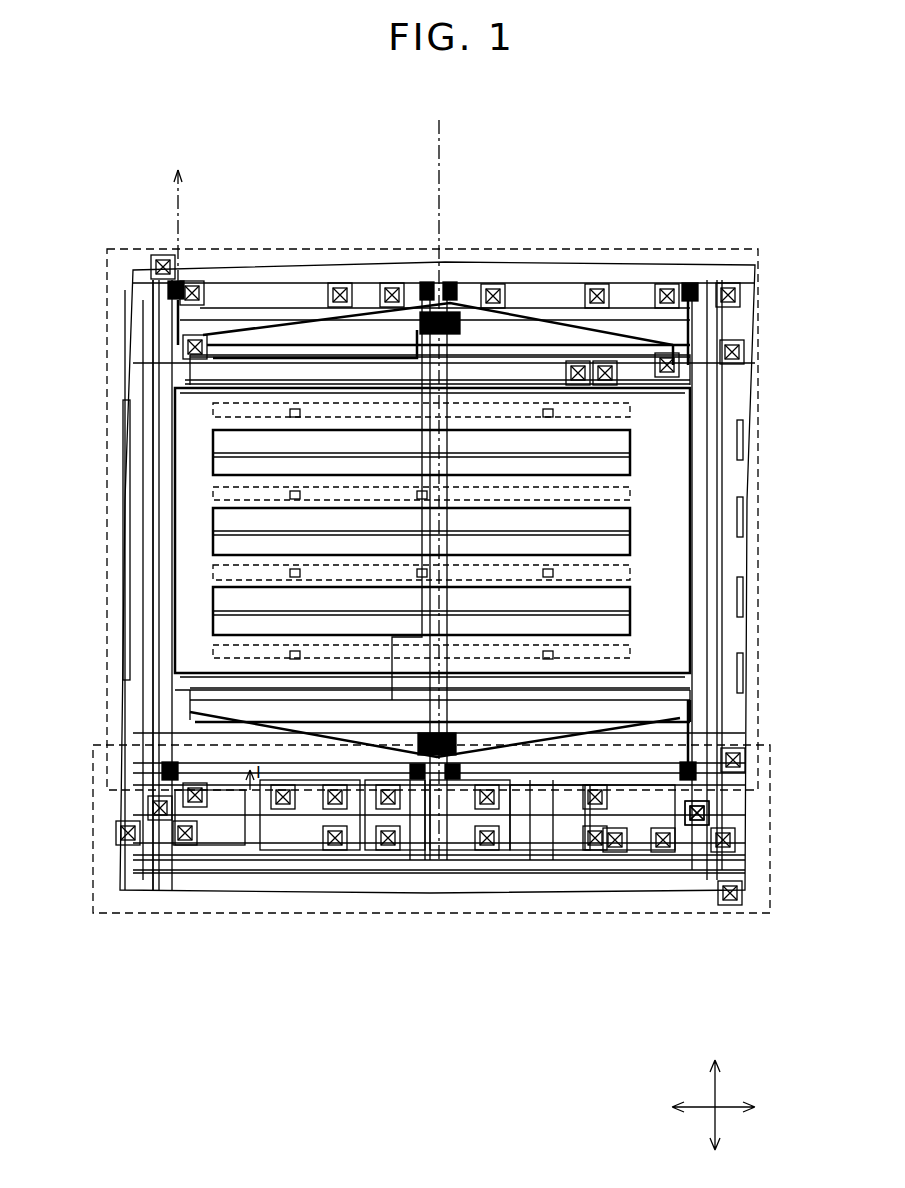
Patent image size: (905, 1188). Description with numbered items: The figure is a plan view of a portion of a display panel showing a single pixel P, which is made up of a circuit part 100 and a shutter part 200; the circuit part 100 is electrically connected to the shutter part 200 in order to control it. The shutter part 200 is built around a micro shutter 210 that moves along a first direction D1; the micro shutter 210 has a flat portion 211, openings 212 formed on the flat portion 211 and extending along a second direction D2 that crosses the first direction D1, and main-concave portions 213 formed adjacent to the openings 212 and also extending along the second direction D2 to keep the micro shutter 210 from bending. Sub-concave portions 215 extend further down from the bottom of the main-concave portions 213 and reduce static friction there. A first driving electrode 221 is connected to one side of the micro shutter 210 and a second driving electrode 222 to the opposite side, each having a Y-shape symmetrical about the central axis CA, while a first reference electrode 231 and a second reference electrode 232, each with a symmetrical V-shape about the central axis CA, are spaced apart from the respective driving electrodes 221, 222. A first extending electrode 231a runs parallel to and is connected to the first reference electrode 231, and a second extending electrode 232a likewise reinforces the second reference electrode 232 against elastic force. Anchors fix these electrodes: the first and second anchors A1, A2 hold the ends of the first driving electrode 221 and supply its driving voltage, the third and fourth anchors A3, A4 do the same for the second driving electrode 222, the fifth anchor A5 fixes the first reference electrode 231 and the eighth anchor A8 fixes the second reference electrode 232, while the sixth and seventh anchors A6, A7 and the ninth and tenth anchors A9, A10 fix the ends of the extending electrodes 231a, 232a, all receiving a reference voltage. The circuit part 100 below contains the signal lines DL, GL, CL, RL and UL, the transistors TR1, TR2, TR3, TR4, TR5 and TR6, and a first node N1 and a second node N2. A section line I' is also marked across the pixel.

The pixel P is at (388, 140).
The central axis CA is at (445, 120).
The section line I' is at (177, 215).
The first anchor A1 is at (183, 285).
The second anchor A2 is at (688, 285).
The third anchor A3 is at (162, 770).
The fourth anchor A4 is at (696, 772).
The fifth anchor A5 is at (395, 300).
The sixth anchor A6 is at (424, 282).
The seventh anchor A7 is at (452, 282).
The eighth anchor A8 is at (417, 782).
The ninth anchor A9 is at (433, 835).
The tenth anchor A10 is at (447, 782).
The second driving electrode 222 is at (315, 335).
The first driving electrode 221 is at (680, 345).
The first reference electrode 231 is at (318, 343).
The first extending electrode 231a is at (196, 343).
The second reference electrode 232 is at (640, 683).
The second extending electrode 232a is at (690, 713).
The shutter part 200 is at (762, 388).
The micro shutter 210 is at (175, 493).
The flat portion 211 is at (655, 562).
The opening 212 is at (618, 522).
The main-concave portion 213 is at (632, 497).
The sub-concave portion 215 is at (630, 418).
The first node N1 is at (560, 412).
The second node N2 is at (700, 810).
The gate line GL is at (150, 735).
The signal line CL is at (140, 782).
The signal line RL is at (130, 843).
The signal line UL is at (160, 873).
The data line DL is at (153, 887).
The first transistor TR1 is at (190, 887).
The second transistor TR2 is at (277, 887).
The third transistor TR3 is at (443, 860).
The fourth transistor TR4 is at (386, 800).
The fifth transistor TR5 is at (540, 820).
The sixth transistor TR6 is at (567, 860).
The circuit part 100 is at (772, 888).
The first direction D1 is at (715, 1091).
The second direction D2 is at (732, 1107).